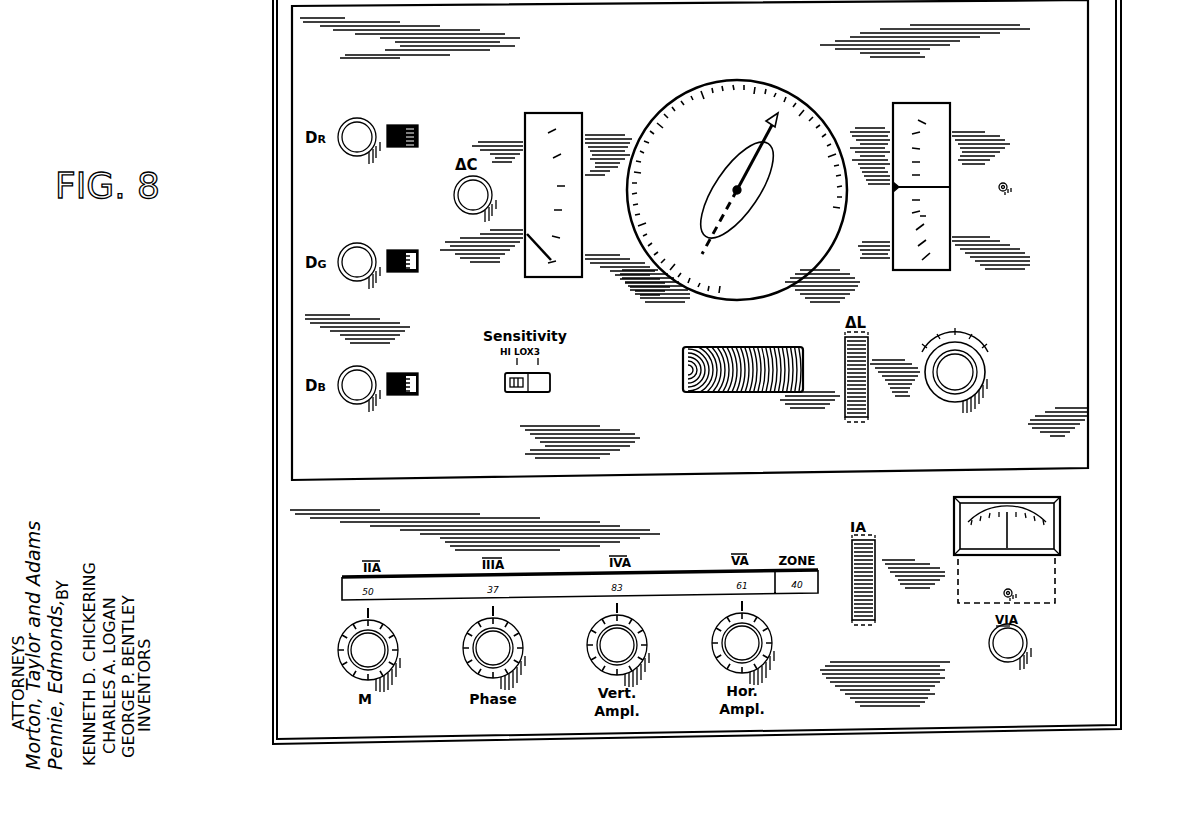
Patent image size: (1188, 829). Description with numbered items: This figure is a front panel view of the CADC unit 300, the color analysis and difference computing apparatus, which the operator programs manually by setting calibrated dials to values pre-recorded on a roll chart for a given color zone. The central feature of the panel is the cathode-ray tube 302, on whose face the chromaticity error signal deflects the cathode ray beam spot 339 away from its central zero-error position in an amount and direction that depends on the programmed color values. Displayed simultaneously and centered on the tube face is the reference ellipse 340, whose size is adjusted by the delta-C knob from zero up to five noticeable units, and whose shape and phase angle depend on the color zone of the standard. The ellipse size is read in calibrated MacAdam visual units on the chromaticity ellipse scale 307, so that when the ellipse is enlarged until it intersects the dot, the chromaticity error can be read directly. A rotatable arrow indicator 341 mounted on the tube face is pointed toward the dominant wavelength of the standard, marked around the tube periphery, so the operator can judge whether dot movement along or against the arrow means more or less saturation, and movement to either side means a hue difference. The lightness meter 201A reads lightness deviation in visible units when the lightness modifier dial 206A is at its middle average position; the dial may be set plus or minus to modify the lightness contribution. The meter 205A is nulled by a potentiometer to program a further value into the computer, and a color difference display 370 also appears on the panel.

The CADC unit 300 is at (1112, 150).
The cathode-ray tube 302 is at (695, 138).
The chromaticity ellipse scale 307 is at (556, 138).
The cathode ray beam spot 339 is at (733, 192).
The reference ellipse 340 is at (762, 206).
The rotatable arrow indicator 341 is at (768, 134).
The lightness meter 201A is at (941, 132).
The lightness modifier dial 206A is at (981, 378).
The color difference display 370 is at (683, 394).
The meter 205A is at (966, 522).